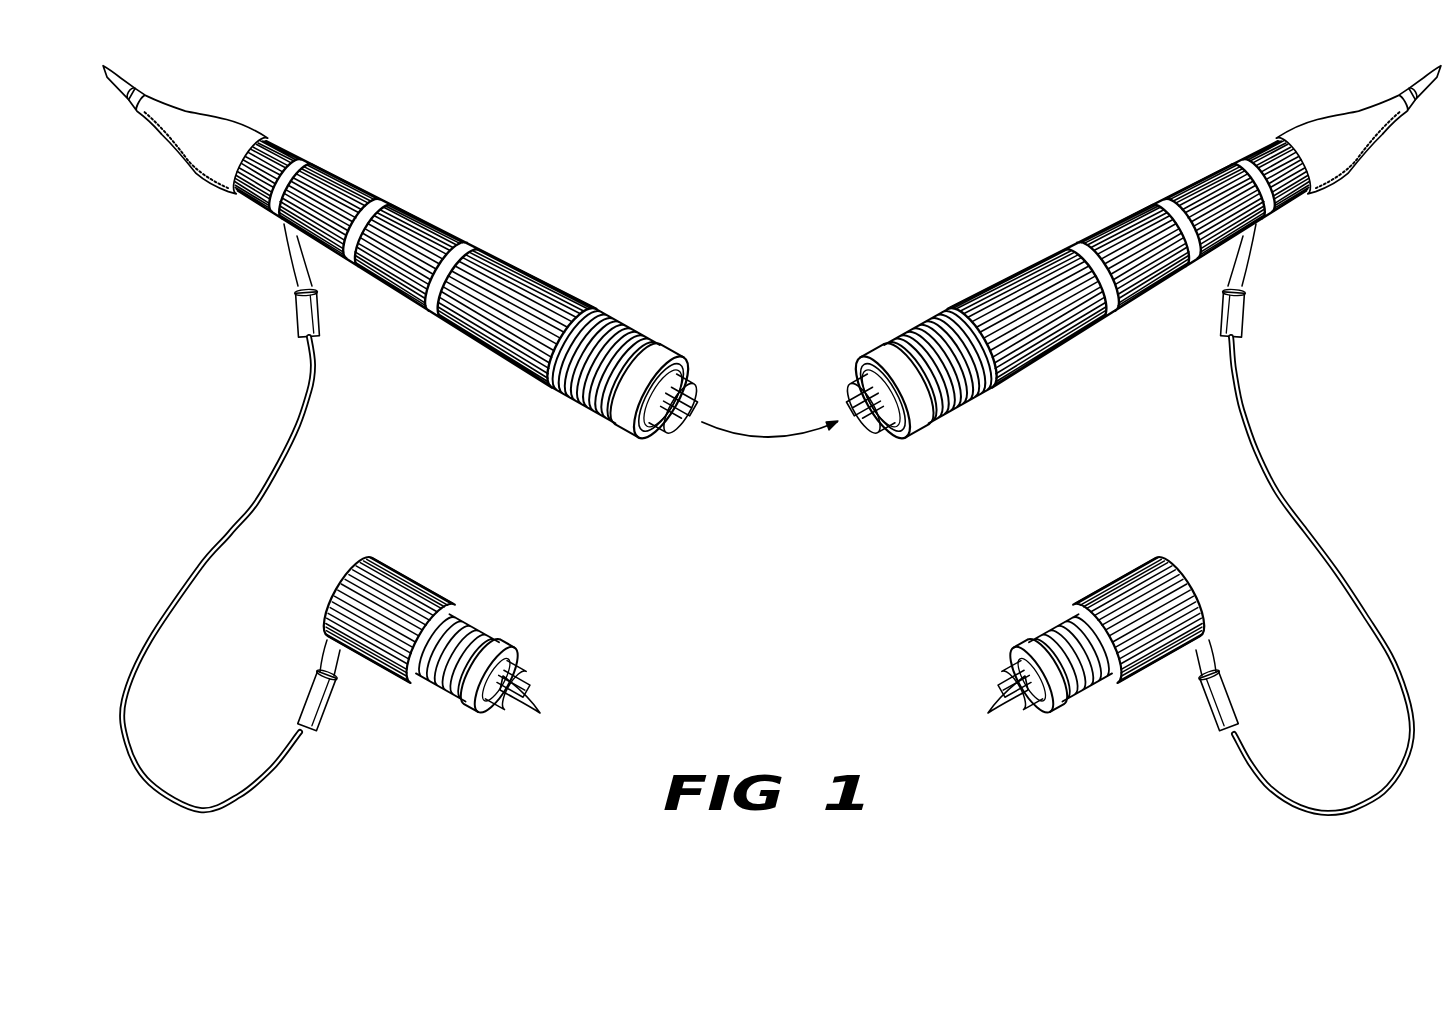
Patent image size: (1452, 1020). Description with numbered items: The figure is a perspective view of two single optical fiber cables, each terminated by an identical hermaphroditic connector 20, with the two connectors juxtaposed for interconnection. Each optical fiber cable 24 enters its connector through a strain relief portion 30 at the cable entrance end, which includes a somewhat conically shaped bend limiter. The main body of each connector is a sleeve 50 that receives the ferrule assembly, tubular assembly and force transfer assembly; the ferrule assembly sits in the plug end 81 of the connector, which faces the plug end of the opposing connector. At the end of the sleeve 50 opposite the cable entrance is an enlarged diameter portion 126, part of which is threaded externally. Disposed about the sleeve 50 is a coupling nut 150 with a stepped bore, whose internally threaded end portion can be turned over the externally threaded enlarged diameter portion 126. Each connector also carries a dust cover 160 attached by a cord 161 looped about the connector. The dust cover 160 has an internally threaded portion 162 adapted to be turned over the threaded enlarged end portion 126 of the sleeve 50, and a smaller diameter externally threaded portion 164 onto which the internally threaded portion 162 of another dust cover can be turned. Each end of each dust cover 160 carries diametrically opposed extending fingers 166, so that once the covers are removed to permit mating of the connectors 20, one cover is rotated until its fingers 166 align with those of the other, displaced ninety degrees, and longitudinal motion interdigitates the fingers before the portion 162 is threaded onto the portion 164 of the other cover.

The single optical fiber hermaphroditic connector 20 is at (794, 110).
The optical fiber cable 24 is at (139, 92).
The strain relief portion 30 is at (259, 124).
The sleeve 50 is at (667, 356).
The plug end 81 is at (697, 407).
The enlarged diameter portion 126 is at (627, 340).
The coupling nut 150 is at (535, 278).
The dust cover 160 is at (400, 557).
The cord 161 is at (272, 473).
The internally threaded portion 162 is at (430, 588).
The smaller diameter externally threaded portion 164 is at (490, 620).
The fingers 166 is at (764, 702).